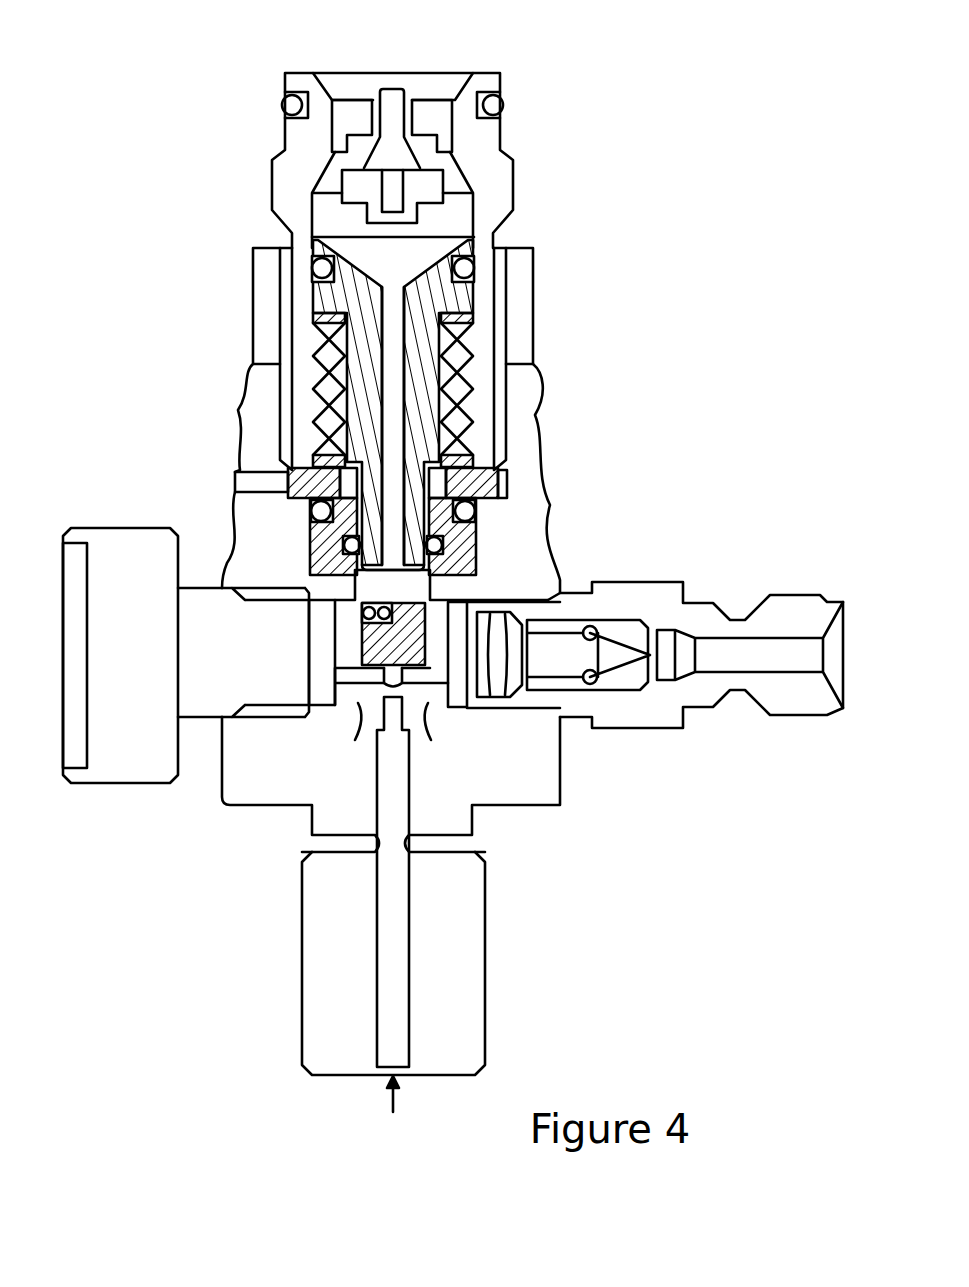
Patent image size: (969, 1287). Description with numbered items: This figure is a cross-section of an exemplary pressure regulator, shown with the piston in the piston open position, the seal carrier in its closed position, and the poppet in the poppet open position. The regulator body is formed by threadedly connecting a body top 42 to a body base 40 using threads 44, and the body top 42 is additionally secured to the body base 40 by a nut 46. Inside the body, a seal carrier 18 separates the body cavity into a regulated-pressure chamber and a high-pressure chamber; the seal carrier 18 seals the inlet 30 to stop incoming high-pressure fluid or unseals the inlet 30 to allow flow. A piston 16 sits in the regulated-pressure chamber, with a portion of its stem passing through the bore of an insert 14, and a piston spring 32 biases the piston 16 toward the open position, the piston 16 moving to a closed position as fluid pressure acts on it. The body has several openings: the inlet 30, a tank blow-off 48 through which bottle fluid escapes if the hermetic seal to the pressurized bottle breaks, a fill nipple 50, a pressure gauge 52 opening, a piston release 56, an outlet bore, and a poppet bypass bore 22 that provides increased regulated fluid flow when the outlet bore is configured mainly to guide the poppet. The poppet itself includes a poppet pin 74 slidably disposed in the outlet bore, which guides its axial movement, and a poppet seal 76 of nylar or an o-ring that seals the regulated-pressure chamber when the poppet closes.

The insert 14 is at (448, 585).
The piston 16 is at (310, 293).
The seal carrier 18 is at (416, 603).
The poppet bypass bore 22 is at (327, 132).
The inlet 30 is at (392, 1114).
The piston spring 32 is at (310, 347).
The body base 40 is at (543, 395).
The body top 42 is at (514, 166).
The threads 44 is at (290, 386).
The nut 46 is at (253, 252).
The tank blow-off 48 is at (440, 854).
The fill nipple 50 is at (468, 713).
The pressure gauge 52 is at (360, 705).
The piston release 56 is at (250, 438).
The poppet pin 74 is at (391, 90).
The poppet seal 76 is at (342, 188).